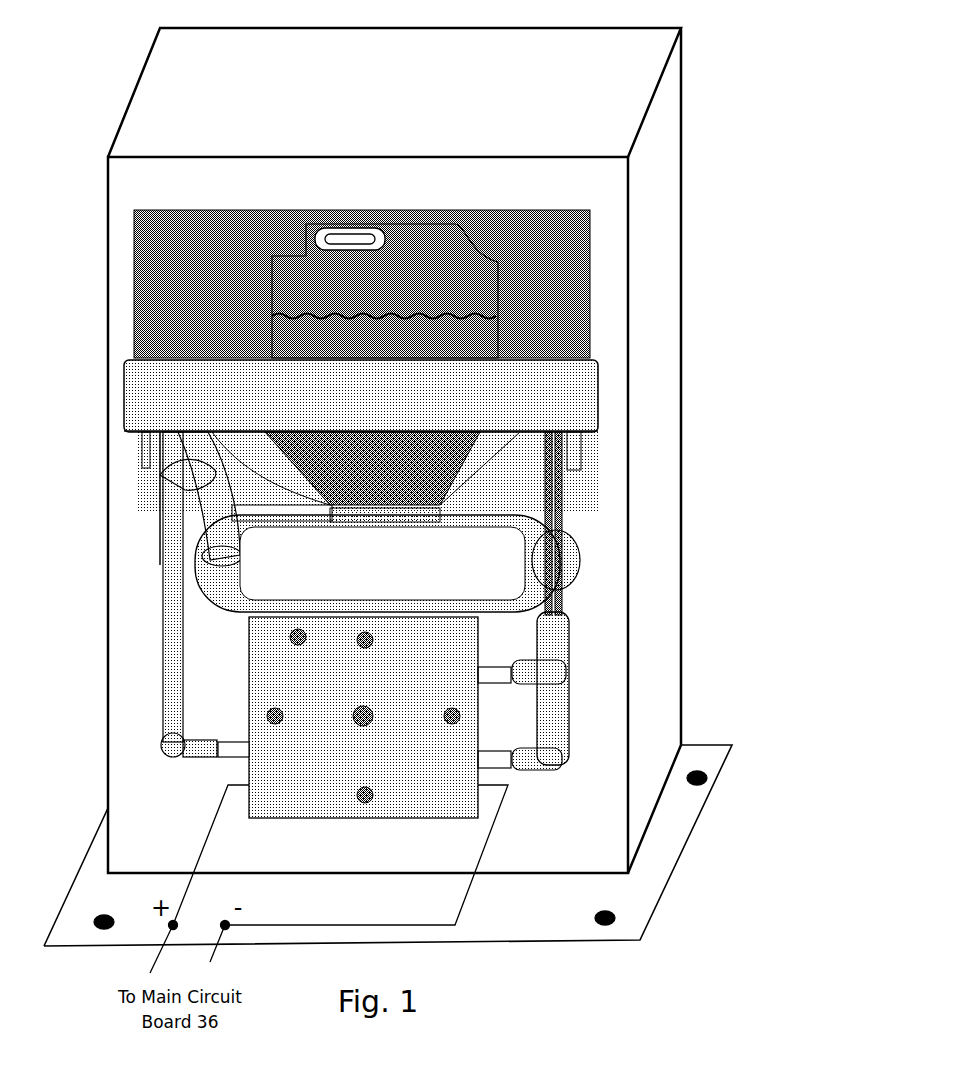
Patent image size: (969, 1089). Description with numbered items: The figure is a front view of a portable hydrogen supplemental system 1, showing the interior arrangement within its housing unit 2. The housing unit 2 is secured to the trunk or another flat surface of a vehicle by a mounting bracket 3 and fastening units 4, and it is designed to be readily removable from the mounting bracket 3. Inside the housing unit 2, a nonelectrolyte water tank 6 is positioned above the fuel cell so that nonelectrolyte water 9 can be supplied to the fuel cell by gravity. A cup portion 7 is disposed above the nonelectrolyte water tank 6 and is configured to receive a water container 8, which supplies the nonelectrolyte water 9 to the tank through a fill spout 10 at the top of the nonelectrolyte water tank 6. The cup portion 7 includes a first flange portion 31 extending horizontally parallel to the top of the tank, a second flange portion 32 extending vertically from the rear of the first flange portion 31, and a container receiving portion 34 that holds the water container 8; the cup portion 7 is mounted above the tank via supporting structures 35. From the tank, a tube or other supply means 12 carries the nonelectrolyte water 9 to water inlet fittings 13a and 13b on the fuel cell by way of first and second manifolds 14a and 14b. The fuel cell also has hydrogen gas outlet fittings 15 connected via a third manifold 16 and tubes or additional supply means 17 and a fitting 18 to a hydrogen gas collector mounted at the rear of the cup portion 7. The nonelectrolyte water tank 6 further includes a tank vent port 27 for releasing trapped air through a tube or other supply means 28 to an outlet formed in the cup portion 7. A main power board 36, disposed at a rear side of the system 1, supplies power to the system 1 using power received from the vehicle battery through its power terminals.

The portable hydrogen supplemental system 1 is at (415, 487).
The housing unit 2 is at (657, 406).
The mounting bracket 3 is at (417, 815).
The fastening units 4 is at (698, 770).
The nonelectrolyte water tank 6 is at (572, 560).
The cup portion 7 is at (384, 384).
The water container 8 is at (494, 234).
The nonelectrolyte water 9 is at (486, 347).
The fill spout 10 is at (460, 551).
The supply means 12 is at (571, 702).
The water inlet fitting 13a is at (500, 685).
The water inlet fitting 13b is at (498, 768).
The first manifold 14a is at (552, 671).
The second manifold 14b is at (550, 750).
The hydrogen gas outlet fittings 15 is at (236, 753).
The third manifold 16 is at (170, 752).
The additional supply means 17 is at (179, 617).
The fitting 18 is at (127, 517).
The tank vent port 27 is at (205, 552).
The supply means 28 is at (185, 475).
The first flange portion 31 is at (140, 385).
The second flange portion 32 is at (563, 253).
The container receiving portion 34 is at (572, 468).
The supporting structures 35 is at (560, 495).
The main power board 36 is at (272, 472).